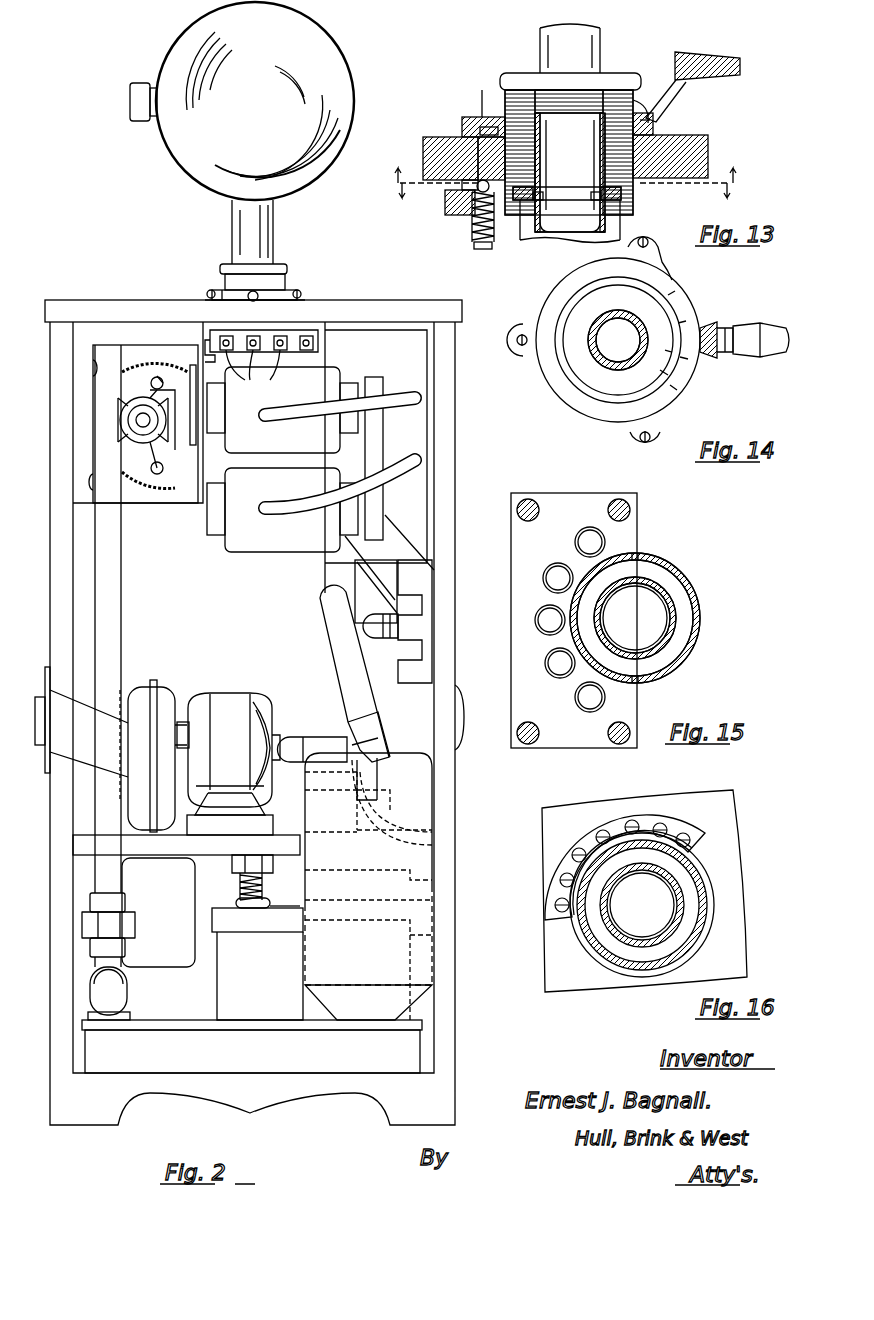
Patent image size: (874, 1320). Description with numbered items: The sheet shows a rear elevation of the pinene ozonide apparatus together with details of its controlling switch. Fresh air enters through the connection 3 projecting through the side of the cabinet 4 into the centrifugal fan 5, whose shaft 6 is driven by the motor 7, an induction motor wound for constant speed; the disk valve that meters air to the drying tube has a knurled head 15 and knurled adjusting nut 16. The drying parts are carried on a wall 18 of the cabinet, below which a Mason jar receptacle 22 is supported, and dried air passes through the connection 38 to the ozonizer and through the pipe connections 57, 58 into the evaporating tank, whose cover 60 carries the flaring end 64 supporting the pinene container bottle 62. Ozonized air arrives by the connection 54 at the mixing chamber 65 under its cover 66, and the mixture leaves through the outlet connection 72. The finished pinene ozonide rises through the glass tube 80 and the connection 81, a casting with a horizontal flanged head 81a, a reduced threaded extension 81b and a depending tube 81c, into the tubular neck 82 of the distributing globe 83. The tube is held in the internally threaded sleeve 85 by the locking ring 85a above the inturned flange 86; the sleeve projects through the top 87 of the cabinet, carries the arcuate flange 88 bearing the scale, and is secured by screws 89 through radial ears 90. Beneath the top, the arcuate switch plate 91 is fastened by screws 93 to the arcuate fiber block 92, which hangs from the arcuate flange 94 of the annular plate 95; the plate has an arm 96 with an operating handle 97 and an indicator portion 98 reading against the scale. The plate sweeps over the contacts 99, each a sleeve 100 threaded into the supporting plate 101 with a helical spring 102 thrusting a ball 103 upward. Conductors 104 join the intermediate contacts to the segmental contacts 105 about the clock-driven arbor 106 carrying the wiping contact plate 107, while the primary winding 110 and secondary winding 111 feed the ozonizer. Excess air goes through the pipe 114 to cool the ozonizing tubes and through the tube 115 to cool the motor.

In FIG. 2, the connection 3 is at (35, 745).
In FIG. 2, the cabinet 4 is at (50, 823).
In FIG. 2, the centrifugal fan 5 is at (135, 808).
In FIG. 2, the shaft 6 is at (182, 735).
In FIG. 2, the motor 7 is at (233, 764).
In FIG. 13, the knurled head 15 is at (558, 195).
In FIG. 13, the knurled adjusting nut 16 is at (568, 175).
In FIG. 2, the wall 18 is at (186, 845).
In FIG. 2, the receptacle 22 is at (138, 912).
In FIG. 2, the connection 38 is at (264, 866).
In FIG. 2, the connection 54 is at (290, 888).
In FIG. 2, the pipe connection 57 is at (118, 880).
In FIG. 2, the pipe connection 58 is at (125, 992).
In FIG. 2, the cover 60 is at (235, 1020).
In FIG. 2, the pinene container bottle 62 is at (368, 886).
In FIG. 2, the flaring end 64 is at (368, 1002).
In FIG. 2, the mixing chamber 65 is at (260, 976).
In FIG. 2, the cover 66 is at (300, 905).
In FIG. 2, the outlet connection 72 is at (245, 878).
In FIG. 13, the glass tube 80 is at (522, 245).
In FIG. 2, the connection 81 is at (280, 268).
In FIG. 13, the connection 81 is at (523, 70).
In FIG. 13, the horizontal flanged head 81a is at (505, 75).
In FIG. 13, the reduced threaded extension 81b is at (645, 95).
In FIG. 13, the depending tube 81c is at (570, 172).
In FIG. 15, the depending tube 81c is at (667, 620).
In FIG. 16, the depending tube 81c is at (672, 928).
In FIG. 2, the tubular neck 82 is at (273, 222).
In FIG. 13, the tubular neck 82 is at (600, 45).
In FIG. 14, the tubular neck 82 is at (585, 368).
In FIG. 2, the distributing globe 83 is at (242, 101).
In FIG. 2, the internally threaded sleeve 85 is at (285, 292).
In FIG. 13, the internally threaded sleeve 85 is at (625, 190).
In FIG. 14, the internally threaded sleeve 85 is at (680, 390).
In FIG. 15, the internally threaded sleeve 85 is at (690, 573).
In FIG. 16, the internally threaded sleeve 85 is at (696, 872).
In FIG. 13, the locking ring 85a is at (610, 200).
In FIG. 14, the locking ring 85a is at (665, 348).
In FIG. 15, the locking ring 85a is at (684, 598).
In FIG. 13, the inturned flange 86 is at (520, 242).
In FIG. 2, the top 87 is at (253, 311).
In FIG. 13, the top 87 is at (708, 145).
In FIG. 16, the top 87 is at (733, 892).
In FIG. 2, the arcuate flange 88 is at (222, 290).
In FIG. 13, the arcuate flange 88 is at (482, 117).
In FIG. 14, the arcuate flange 88 is at (680, 282).
In FIG. 2, the screws 89 is at (208, 292).
In FIG. 13, the screws 89 is at (468, 118).
In FIG. 14, the screws 89 is at (655, 230).
In FIG. 2, the radial ears 90 is at (256, 300).
In FIG. 13, the radial ears 90 is at (480, 131).
In FIG. 14, the radial ears 90 is at (650, 245).
In FIG. 13, the arcuate switch plate 91 is at (450, 200).
In FIG. 16, the arcuate switch plate 91 is at (690, 822).
In FIG. 13, the arcuate fiber block 92 is at (478, 160).
In FIG. 16, the screws 93 is at (662, 822).
In FIG. 13, the arcuate flange 94 is at (462, 125).
In FIG. 2, the annular plate 95 is at (210, 298).
In FIG. 13, the annular plate 95 is at (503, 95).
In FIG. 14, the annular plate 95 is at (580, 408).
In FIG. 13, the arm 96 is at (665, 108).
In FIG. 13, the operating handle 97 is at (715, 55).
In FIG. 14, the operating handle 97 is at (765, 328).
In FIG. 14, the indicator portion 98 is at (718, 330).
In FIG. 15, the contacts 99 is at (540, 650).
In FIG. 13, the sleeve 100 is at (476, 222).
In FIG. 15, the sleeve 100 is at (575, 570).
In FIG. 13, the supporting plate 101 is at (462, 188).
In FIG. 15, the supporting plate 101 is at (568, 528).
In FIG. 13, the helical spring 102 is at (476, 250).
In FIG. 13, the ball 103 is at (478, 190).
In FIG. 15, the ball 103 is at (588, 530).
In FIG. 2, the conductors 104 is at (261, 363).
In FIG. 2, the segmental contacts 105 is at (120, 428).
In FIG. 2, the arbor 106 is at (140, 445).
In FIG. 2, the wiping contact plate 107 is at (168, 450).
In FIG. 2, the primary winding 110 is at (350, 380).
In FIG. 2, the secondary winding 111 is at (282, 459).
In FIG. 2, the pipe 114 is at (340, 625).
In FIG. 2, the tube 115 is at (312, 740).